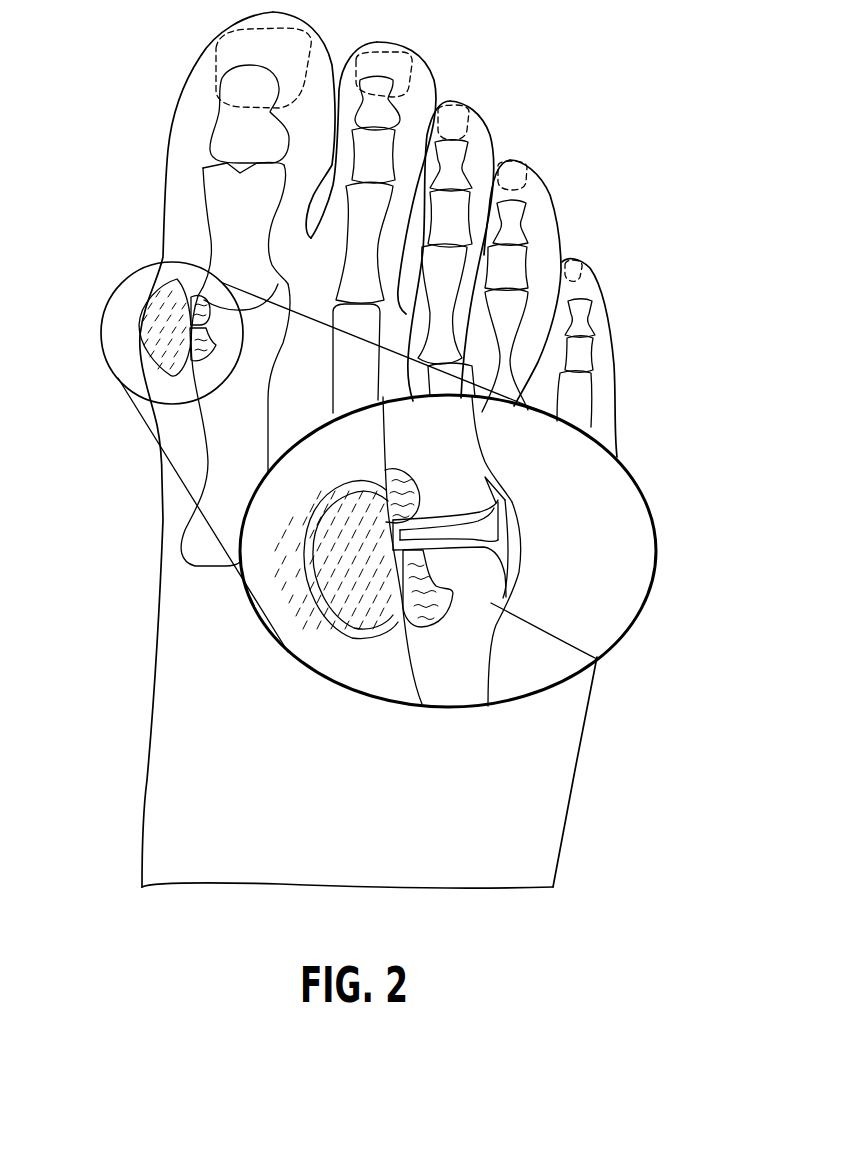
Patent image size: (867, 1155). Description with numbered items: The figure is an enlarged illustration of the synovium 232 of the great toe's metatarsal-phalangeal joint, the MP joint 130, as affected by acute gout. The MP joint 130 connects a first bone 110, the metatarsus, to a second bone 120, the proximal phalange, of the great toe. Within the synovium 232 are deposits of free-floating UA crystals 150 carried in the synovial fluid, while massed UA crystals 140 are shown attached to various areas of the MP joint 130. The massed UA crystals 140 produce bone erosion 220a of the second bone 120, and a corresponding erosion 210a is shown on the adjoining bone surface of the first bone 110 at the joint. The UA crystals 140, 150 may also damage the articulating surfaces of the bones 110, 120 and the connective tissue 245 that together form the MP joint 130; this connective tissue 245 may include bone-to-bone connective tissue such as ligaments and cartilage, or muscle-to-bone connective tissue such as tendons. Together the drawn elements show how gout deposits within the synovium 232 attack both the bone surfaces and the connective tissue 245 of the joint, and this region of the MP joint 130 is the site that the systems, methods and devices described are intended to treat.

The first bone 110 is at (467, 657).
The second bone 120 is at (453, 442).
The MP joint 130 is at (565, 527).
The massed UA crystals 140 is at (304, 520).
The free-floating UA crystals 150 is at (340, 512).
The proximal fragment cut surface 210a is at (466, 598).
The bone erosion 220a is at (428, 495).
The synovium 232 is at (535, 544).
The connective tissue 245 is at (506, 500).